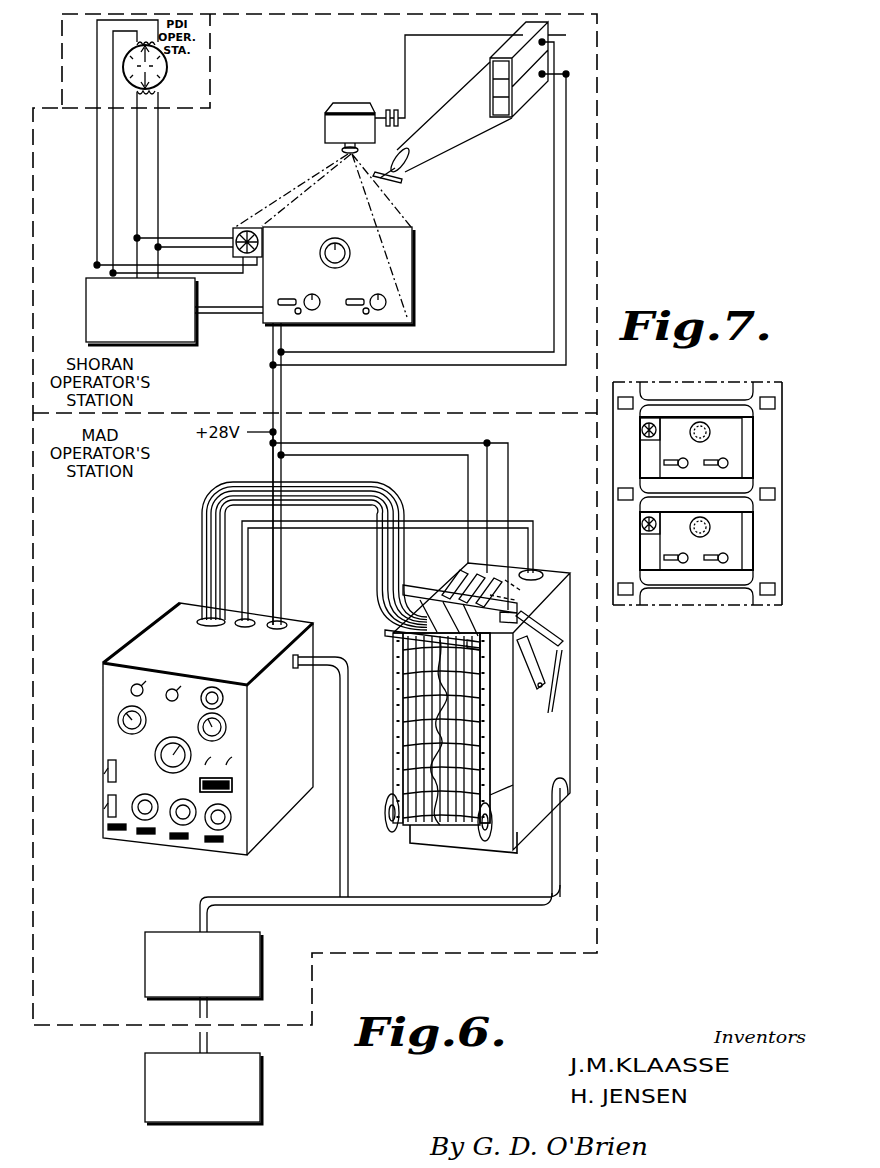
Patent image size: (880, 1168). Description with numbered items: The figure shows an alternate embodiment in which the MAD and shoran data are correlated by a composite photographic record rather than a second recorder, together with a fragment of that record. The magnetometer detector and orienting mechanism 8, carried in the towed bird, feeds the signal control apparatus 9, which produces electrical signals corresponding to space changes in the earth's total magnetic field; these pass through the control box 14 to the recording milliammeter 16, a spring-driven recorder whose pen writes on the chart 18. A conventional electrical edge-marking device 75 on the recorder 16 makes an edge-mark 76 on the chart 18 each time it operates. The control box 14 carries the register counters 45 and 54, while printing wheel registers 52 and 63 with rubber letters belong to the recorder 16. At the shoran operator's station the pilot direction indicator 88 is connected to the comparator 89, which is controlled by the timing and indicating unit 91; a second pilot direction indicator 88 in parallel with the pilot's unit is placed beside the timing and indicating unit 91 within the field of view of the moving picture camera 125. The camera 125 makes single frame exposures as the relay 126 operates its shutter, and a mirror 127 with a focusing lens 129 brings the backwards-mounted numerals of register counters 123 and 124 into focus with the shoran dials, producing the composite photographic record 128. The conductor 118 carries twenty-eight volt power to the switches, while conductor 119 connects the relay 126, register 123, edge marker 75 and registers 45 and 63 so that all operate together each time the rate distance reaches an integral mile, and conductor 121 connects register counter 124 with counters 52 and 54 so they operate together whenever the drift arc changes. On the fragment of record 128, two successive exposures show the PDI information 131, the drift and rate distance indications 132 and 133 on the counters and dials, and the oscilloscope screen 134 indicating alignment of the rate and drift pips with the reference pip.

In FIG. 6, the magnetometer detector and orienting mechanism 8 is at (262, 1075).
In FIG. 6, the signal control apparatus 9 is at (262, 966).
In FIG. 6, the control box 14 is at (262, 832).
In FIG. 6, the recording milliammeter 16 is at (570, 733).
In FIG. 6, the chart 18 is at (487, 708).
In FIG. 6, the register counter 45 is at (232, 785).
In FIG. 6, the register counter 52 is at (460, 574).
In FIG. 6, the register counter 54 is at (200, 785).
In FIG. 6, the register counter 63 is at (515, 580).
In FIG. 6, the edge-marking device 75 is at (539, 662).
In FIG. 6, the edge-mark 76 is at (485, 745).
In FIG. 6, the pilot direction indicator 88 is at (168, 70).
In FIG. 6, the comparator 89 is at (86, 323).
In FIG. 6, the timing and indicating unit 91 is at (412, 282).
In FIG. 6, the conductor 118 is at (273, 463).
In FIG. 6, the conductor 119 is at (572, 146).
In FIG. 6, the conductor 121 is at (554, 150).
In FIG. 6, the register counter 123 is at (516, 100).
In FIG. 6, the register counter 124 is at (495, 52).
In FIG. 6, the moving picture camera 125 is at (325, 135).
In FIG. 6, the relay 126 is at (405, 108).
In FIG. 6, the mirror 127 is at (392, 186).
In FIG. 7, the composite photographic record 128 is at (768, 447).
In FIG. 6, the focusing lens 129 is at (412, 158).
In FIG. 7, the PDI information 131 is at (640, 433).
In FIG. 7, the drift distance indication 132 is at (679, 457).
In FIG. 7, the rate distance indication 133 is at (723, 459).
In FIG. 7, the oscilloscope screen photograph 134 is at (701, 420).